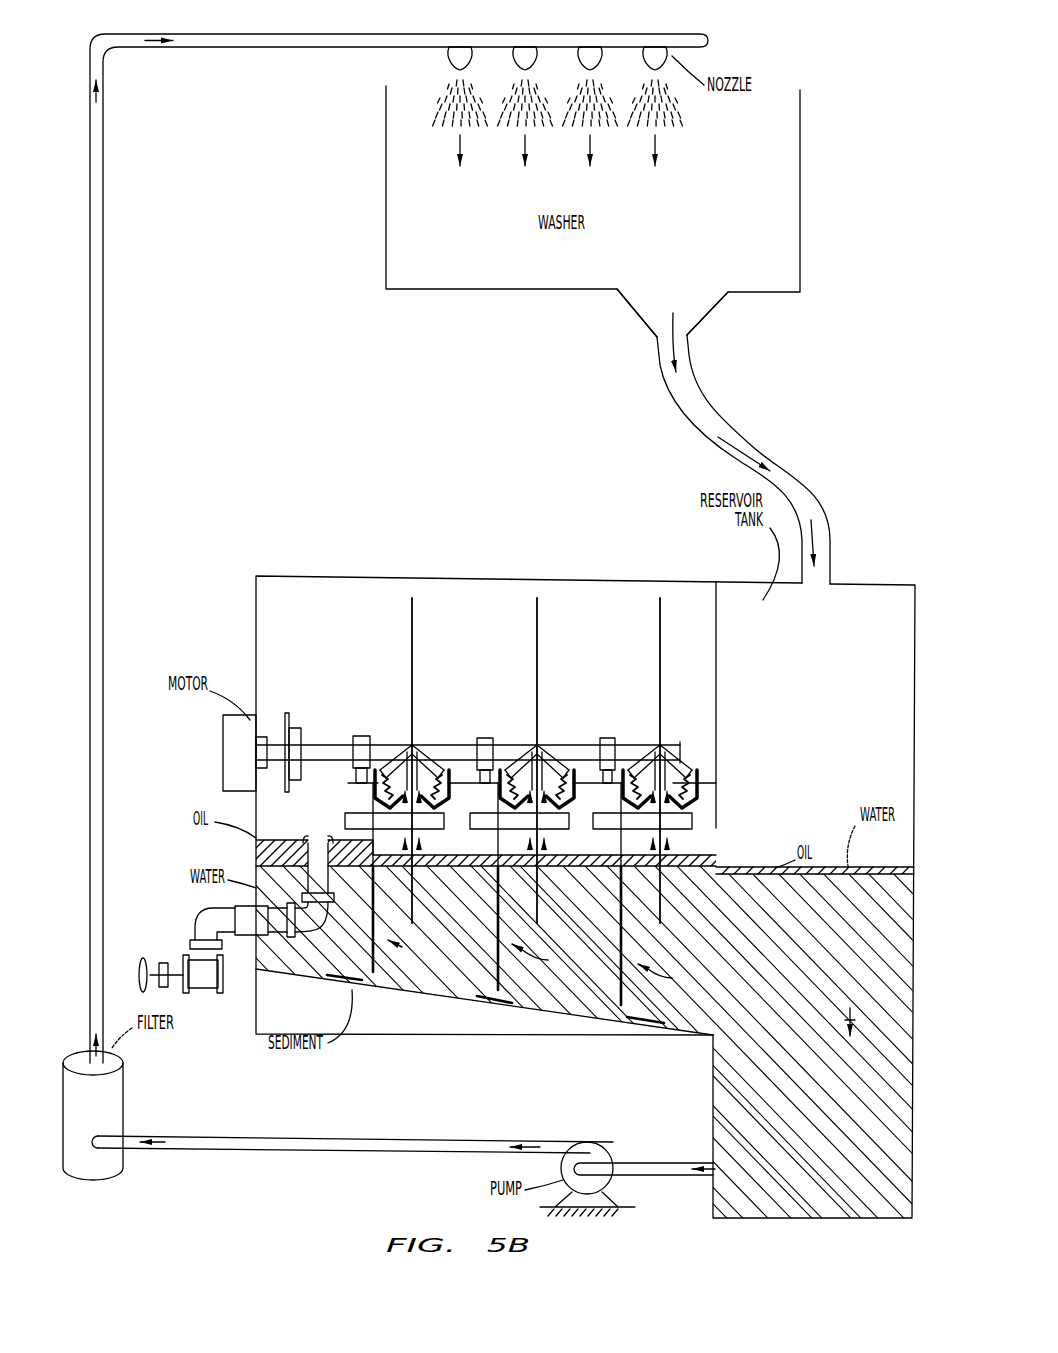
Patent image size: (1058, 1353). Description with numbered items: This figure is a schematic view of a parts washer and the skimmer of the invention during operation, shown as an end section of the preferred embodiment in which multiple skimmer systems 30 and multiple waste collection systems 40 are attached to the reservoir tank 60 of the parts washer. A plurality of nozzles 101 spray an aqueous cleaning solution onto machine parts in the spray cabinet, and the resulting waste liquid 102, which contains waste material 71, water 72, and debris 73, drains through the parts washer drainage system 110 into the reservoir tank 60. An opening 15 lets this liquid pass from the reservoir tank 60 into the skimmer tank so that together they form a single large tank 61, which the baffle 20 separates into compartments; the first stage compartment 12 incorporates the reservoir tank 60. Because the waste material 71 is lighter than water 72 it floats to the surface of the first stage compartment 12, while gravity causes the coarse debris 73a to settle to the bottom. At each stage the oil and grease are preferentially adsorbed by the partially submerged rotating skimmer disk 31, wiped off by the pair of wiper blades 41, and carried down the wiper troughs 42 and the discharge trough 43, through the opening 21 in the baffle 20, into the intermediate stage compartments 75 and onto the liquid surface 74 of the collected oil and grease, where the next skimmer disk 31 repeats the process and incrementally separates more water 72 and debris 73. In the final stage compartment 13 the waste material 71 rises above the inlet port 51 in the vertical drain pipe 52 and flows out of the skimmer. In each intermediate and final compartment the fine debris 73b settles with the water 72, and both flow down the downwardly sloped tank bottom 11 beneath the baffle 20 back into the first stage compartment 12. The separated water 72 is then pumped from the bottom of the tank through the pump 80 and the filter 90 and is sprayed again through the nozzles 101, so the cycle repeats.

The nozzles 101 is at (632, 25).
The parts washer drainage system 110 is at (768, 421).
The waste liquid 102 is at (782, 466).
The single large tank 61 is at (659, 547).
The reservoir tank 60 is at (917, 556).
The first stage compartment 12 is at (672, 902).
The sloped floor 11 is at (558, 1010).
The water 72 is at (800, 992).
The waste material 71 is at (256, 855).
The second stage compartment 13 is at (330, 946).
The opening 15 is at (732, 933).
The skimmer system 30 is at (393, 679).
The intermediate stage compartments 75 is at (308, 783).
The wiper troughs 42 is at (364, 745).
The skimmer disk 31 is at (413, 628).
The waste collection system 40 is at (439, 714).
The wiper blades 41 is at (407, 736).
The discharge trough 43 is at (450, 806).
The opening in the baffle 21 is at (370, 822).
The liquid surface 74 is at (262, 832).
The inlet port 51 is at (304, 836).
The vertical drain pipe 52 is at (325, 893).
The debris 73 is at (450, 929).
The fine debris 73b is at (362, 977).
The coarse debris 73a is at (852, 1018).
The baffle 20 is at (403, 947).
The filter 90 is at (166, 1090).
The pump 80 is at (601, 1124).